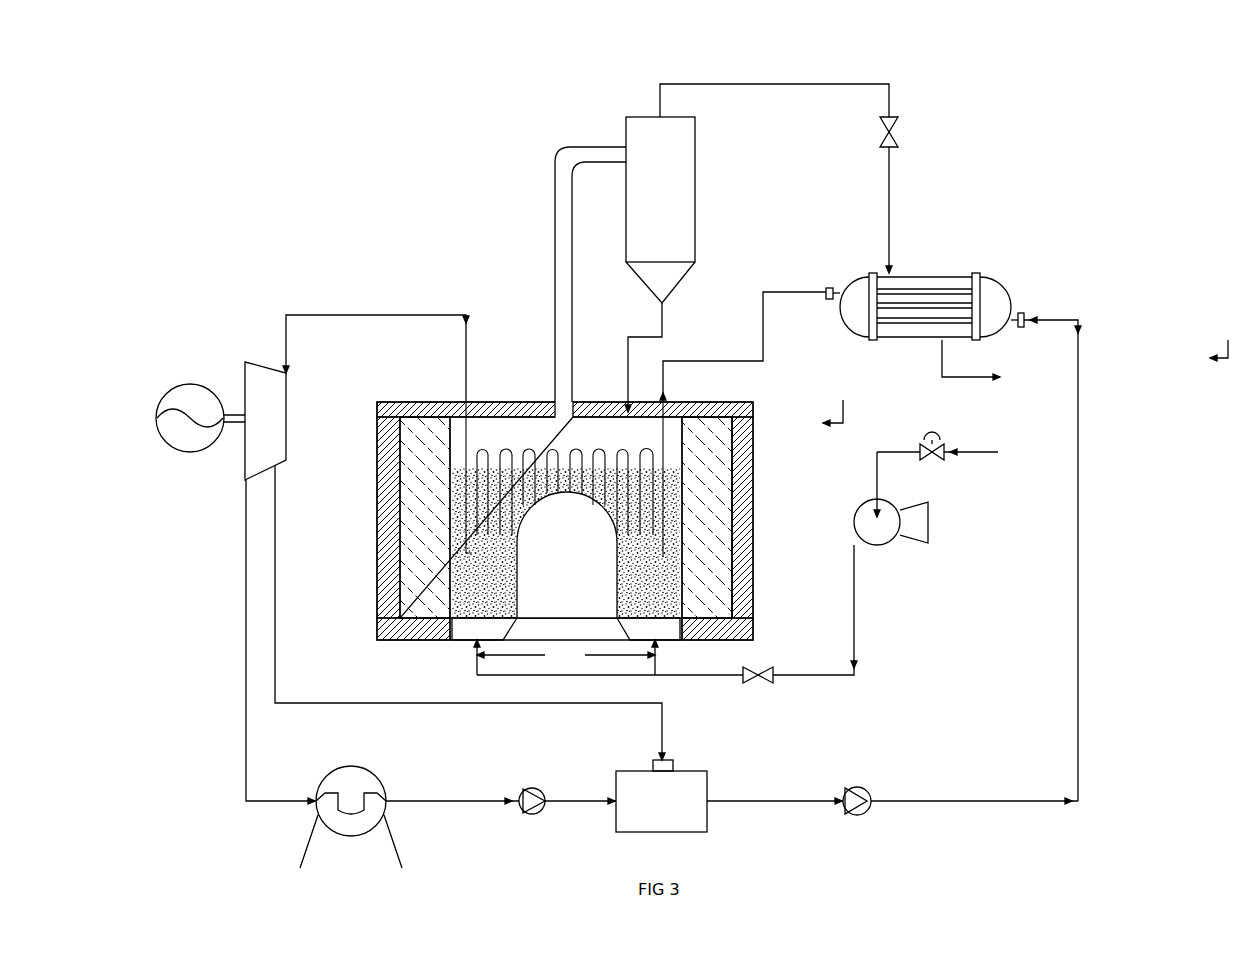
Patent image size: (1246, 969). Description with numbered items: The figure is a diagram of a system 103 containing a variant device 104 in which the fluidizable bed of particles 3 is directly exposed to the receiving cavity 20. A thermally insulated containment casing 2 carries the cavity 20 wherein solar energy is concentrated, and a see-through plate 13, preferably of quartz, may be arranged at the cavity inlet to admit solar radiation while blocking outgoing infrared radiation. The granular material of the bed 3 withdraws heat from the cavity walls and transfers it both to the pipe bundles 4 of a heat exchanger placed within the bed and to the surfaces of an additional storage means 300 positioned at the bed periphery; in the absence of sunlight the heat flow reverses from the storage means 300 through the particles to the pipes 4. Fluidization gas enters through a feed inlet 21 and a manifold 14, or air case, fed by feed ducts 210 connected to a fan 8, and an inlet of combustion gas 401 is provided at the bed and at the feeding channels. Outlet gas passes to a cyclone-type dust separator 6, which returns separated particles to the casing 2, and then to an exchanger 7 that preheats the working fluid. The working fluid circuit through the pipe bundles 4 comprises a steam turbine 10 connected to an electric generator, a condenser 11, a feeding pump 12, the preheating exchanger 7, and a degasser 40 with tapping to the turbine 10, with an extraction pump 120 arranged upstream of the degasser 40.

The containment casing 2 is at (743, 525).
The bed of particles 3 is at (647, 583).
The pipe bundles 4 is at (663, 433).
The dust separator 6 is at (675, 175).
The heat exchanger 7 is at (1000, 290).
The forced circulation means 8 is at (912, 522).
The steam turbine 10 is at (273, 390).
The condenser 11 is at (347, 825).
The feeding pump 12 is at (860, 808).
The plate 13 is at (585, 620).
The manifold 14 is at (655, 628).
The receiving cavity 20 is at (567, 555).
The feed inlet 21 is at (475, 618).
The degasser 40 is at (653, 817).
The system 103 is at (1222, 329).
The device 104 is at (846, 398).
The extraction pump 120 is at (532, 815).
The feed ducts 210 is at (805, 675).
The storage means 300 is at (405, 550).
The inlet of combustion gas 401 is at (514, 657).